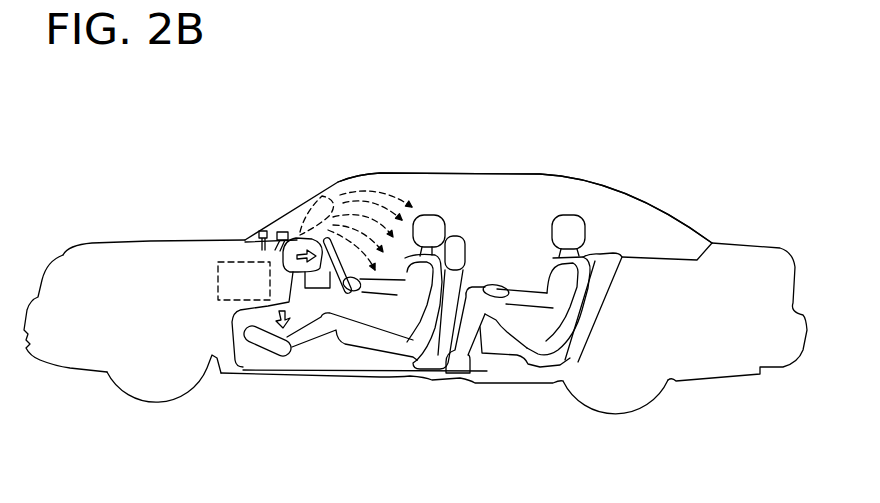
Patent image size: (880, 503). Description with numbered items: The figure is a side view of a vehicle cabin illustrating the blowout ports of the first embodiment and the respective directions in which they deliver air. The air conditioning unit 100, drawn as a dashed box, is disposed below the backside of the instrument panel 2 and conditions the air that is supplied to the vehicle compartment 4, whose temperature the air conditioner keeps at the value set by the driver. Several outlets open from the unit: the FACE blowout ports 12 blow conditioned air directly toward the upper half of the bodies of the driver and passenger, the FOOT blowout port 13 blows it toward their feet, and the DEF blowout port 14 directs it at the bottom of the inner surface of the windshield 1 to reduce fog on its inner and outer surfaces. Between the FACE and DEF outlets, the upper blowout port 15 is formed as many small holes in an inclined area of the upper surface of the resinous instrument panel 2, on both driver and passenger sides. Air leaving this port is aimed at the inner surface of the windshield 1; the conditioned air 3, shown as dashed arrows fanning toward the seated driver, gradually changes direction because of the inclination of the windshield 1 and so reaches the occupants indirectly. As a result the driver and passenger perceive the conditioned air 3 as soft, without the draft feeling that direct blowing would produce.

The windshield 1 is at (257, 230).
The instrument panel 2 is at (320, 275).
The conditioned air 3 is at (301, 212).
The vehicle compartment 4 is at (583, 203).
The FACE blowout ports 12 is at (305, 271).
The FOOT blowout port 13 is at (268, 315).
The DEF blowout port 14 is at (253, 248).
The upper blowout port 15 is at (280, 232).
The air conditioning unit 100 is at (217, 277).